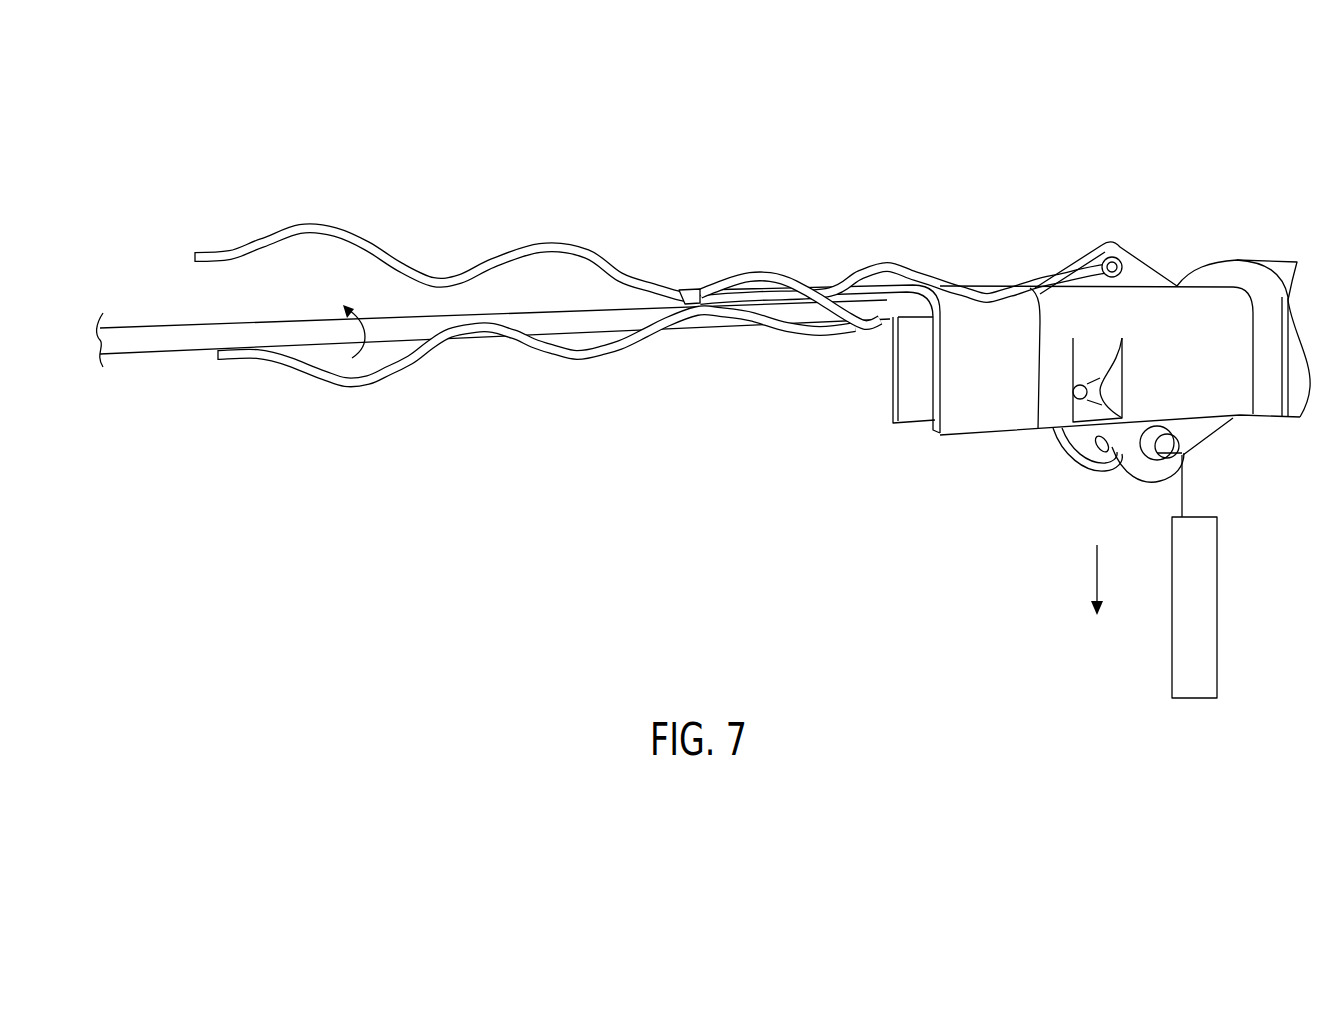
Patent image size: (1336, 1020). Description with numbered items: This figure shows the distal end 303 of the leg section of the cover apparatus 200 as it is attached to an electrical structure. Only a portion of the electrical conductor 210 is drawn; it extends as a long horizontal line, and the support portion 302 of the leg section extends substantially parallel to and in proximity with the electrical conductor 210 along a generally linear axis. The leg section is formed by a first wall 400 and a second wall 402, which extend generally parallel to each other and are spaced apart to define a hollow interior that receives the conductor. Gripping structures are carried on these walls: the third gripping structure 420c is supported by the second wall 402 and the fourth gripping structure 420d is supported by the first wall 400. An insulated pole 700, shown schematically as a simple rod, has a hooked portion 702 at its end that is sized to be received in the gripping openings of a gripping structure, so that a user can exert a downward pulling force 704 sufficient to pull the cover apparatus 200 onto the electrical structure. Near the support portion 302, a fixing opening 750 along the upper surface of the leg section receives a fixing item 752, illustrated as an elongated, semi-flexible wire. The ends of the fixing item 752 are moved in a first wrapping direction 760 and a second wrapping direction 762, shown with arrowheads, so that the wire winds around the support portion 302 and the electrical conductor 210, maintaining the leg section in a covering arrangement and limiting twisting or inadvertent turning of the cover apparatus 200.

The cover apparatus 200 is at (1022, 146).
The electrical conductor 210 is at (135, 345).
The support portion 302 is at (697, 290).
The distal end 303 is at (957, 300).
The first wall 400 is at (948, 428).
The second wall 402 is at (903, 387).
The third gripping structure 420c is at (1085, 467).
The fourth gripping structure 420d is at (1193, 450).
The insulated pole 700 is at (1170, 670).
The hooked portion 702 is at (1180, 497).
The pulling force 704 is at (1090, 578).
The fixing opening 750 is at (1120, 257).
The fixing item 752 is at (357, 245).
The first wrapping direction 760 is at (157, 290).
The second wrapping direction 762 is at (357, 355).